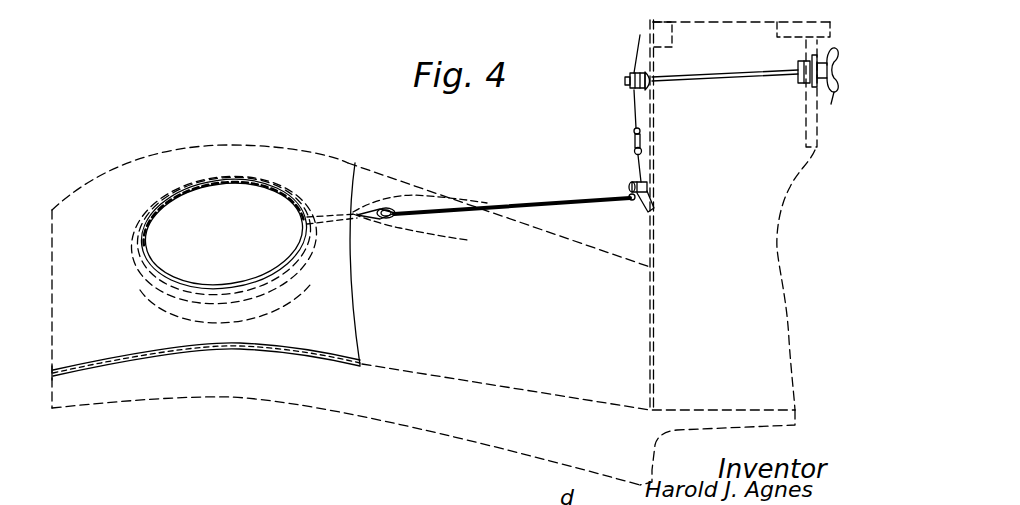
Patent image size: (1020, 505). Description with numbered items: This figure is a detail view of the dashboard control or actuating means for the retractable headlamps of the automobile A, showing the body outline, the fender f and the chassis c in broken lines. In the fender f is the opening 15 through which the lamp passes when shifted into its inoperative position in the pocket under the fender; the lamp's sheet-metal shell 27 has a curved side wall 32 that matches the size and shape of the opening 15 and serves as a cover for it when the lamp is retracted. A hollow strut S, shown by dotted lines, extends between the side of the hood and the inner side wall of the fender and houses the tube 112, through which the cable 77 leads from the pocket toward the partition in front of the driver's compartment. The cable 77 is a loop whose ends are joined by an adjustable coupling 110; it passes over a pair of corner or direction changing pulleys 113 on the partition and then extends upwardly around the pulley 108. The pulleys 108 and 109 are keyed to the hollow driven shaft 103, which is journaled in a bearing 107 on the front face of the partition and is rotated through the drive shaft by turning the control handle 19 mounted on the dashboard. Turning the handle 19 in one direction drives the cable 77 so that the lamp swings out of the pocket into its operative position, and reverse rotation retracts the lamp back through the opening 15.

The opening 15 is at (297, 262).
The control handle 19 is at (831, 104).
The shell 27 is at (271, 210).
The side wall 32 is at (246, 200).
The cable 77 is at (492, 212).
The driven shaft 103 is at (743, 75).
The bearing 107 is at (652, 88).
The pulley 108 is at (633, 73).
The pulley 109 is at (640, 35).
The adjustable coupling 110 is at (635, 141).
The tube 112 is at (355, 216).
The corner or direction changing pulleys 113 is at (631, 186).
The automobile A is at (404, 436).
The chassis c is at (468, 448).
The fender f is at (207, 330).
The hollow strut S is at (438, 240).